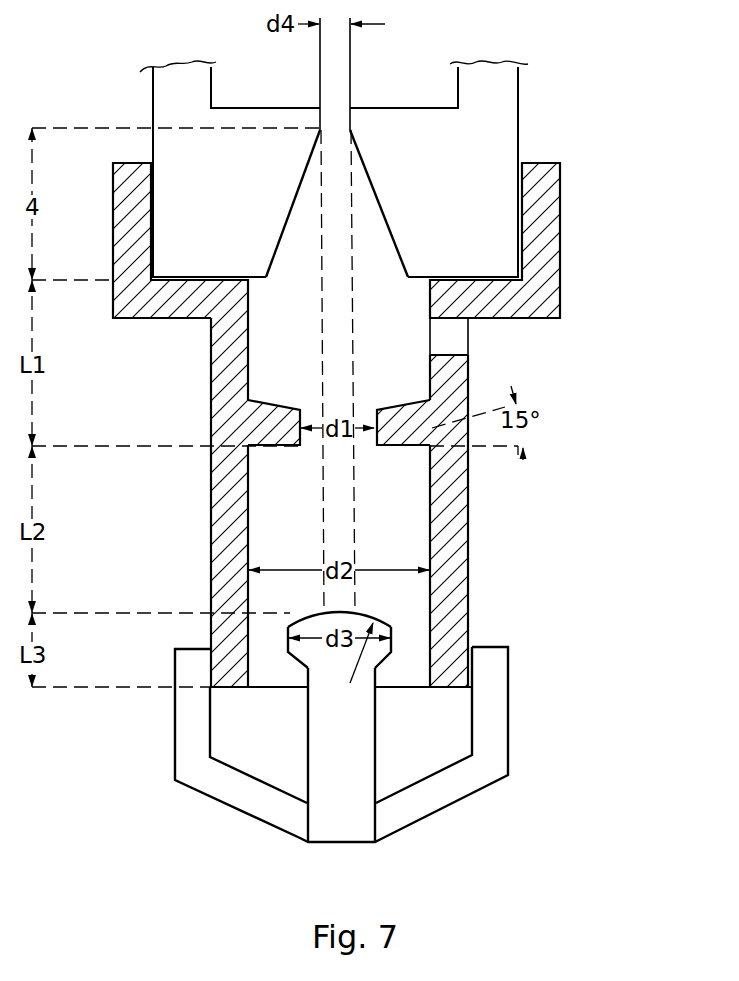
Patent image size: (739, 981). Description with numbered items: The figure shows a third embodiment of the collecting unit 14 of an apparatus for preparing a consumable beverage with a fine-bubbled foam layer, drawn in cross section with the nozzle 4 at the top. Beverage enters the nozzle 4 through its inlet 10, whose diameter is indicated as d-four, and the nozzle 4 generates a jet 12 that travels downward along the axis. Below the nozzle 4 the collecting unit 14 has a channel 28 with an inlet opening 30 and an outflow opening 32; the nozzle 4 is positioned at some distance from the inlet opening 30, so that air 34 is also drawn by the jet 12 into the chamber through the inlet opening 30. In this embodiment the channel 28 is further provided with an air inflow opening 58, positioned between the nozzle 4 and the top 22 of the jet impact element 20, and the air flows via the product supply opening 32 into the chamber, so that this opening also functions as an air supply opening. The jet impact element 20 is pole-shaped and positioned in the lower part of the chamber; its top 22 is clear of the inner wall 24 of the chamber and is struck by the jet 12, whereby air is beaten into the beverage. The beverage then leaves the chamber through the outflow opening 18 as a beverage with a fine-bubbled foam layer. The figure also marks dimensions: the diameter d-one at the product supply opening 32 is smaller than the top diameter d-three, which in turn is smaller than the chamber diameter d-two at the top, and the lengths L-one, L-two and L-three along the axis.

The nozzle 4 is at (334, 169).
The inlet 10 is at (337, 110).
The jet 12 is at (354, 487).
The collecting unit 14 is at (211, 415).
The outflow opening 18 is at (255, 805).
The jet impact element 20 is at (385, 622).
The top 22 is at (305, 617).
The inner wall 24 is at (257, 533).
The channel 28 is at (250, 316).
The inlet opening 30 is at (287, 274).
The outflow opening 32 is at (286, 446).
The air 34 is at (364, 402).
The air inflow opening 58 is at (432, 350).